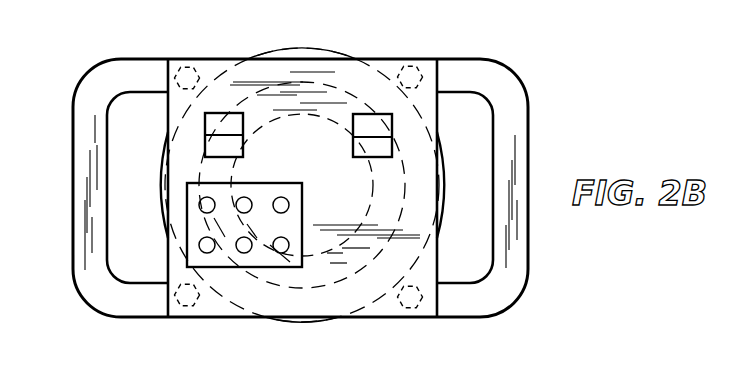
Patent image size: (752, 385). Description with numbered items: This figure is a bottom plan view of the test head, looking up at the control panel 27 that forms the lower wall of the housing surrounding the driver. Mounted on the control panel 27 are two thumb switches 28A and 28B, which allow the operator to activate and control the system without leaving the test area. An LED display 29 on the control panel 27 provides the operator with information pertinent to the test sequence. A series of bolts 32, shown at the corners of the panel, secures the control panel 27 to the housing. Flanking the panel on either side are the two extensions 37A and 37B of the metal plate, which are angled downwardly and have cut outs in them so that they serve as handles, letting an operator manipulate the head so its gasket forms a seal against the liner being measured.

The control panel 27 is at (393, 56).
The thumb switch 28A is at (236, 105).
The thumb switch 28B is at (369, 112).
The LED display 29 is at (244, 270).
The bolts 32 is at (196, 48).
The extension 37A is at (86, 74).
The extension 37B is at (504, 76).